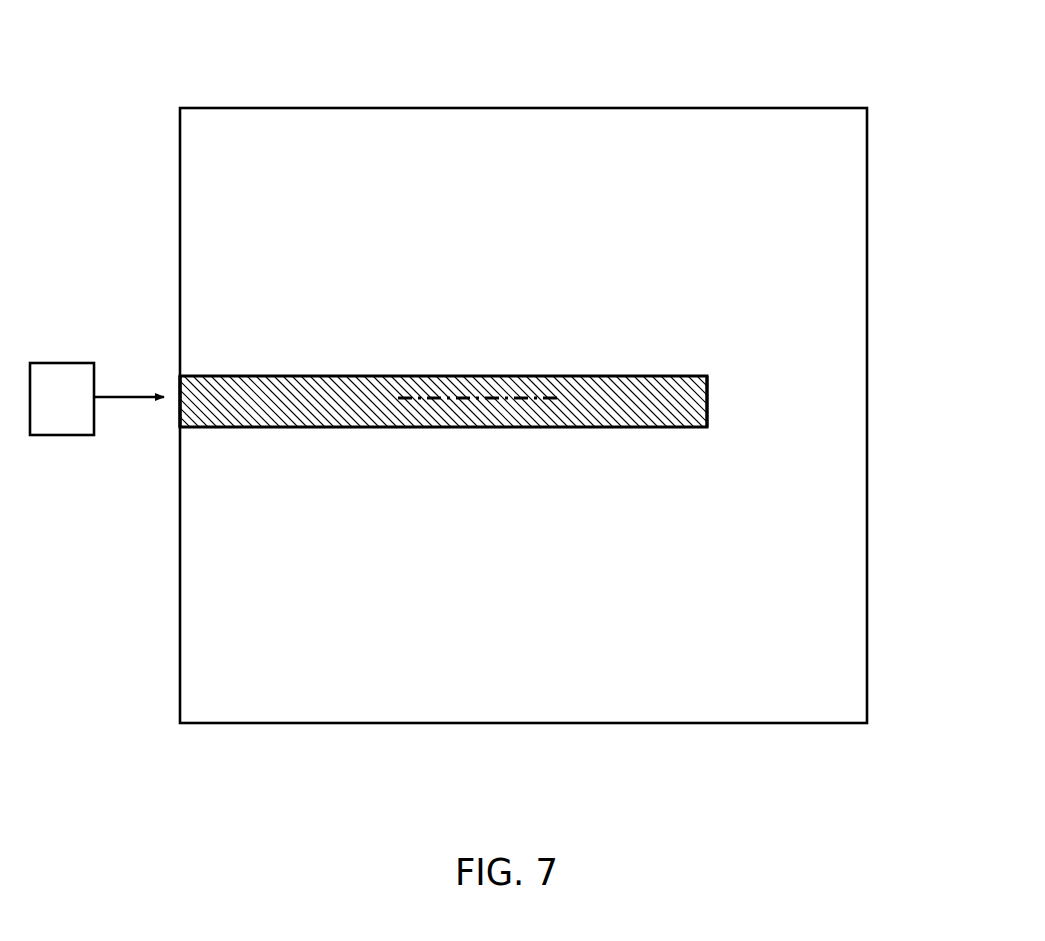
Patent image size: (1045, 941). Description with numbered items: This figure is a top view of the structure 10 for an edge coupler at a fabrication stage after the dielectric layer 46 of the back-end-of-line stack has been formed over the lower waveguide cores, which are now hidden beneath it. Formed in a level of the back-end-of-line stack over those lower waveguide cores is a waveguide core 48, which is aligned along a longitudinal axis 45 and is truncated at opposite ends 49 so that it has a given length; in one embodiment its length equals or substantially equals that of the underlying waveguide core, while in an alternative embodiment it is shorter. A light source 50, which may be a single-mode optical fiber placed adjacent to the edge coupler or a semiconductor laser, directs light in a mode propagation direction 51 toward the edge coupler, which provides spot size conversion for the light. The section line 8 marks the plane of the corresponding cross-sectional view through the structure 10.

The structure 10 is at (137, 78).
The section line 8 is at (595, 55).
The longitudinal axis 45 is at (460, 400).
The dielectric layer 46 is at (806, 217).
The waveguide core 48 is at (329, 400).
The opposite ends 49 is at (707, 404).
The light source 50 is at (62, 399).
The mode propagation direction 51 is at (130, 397).